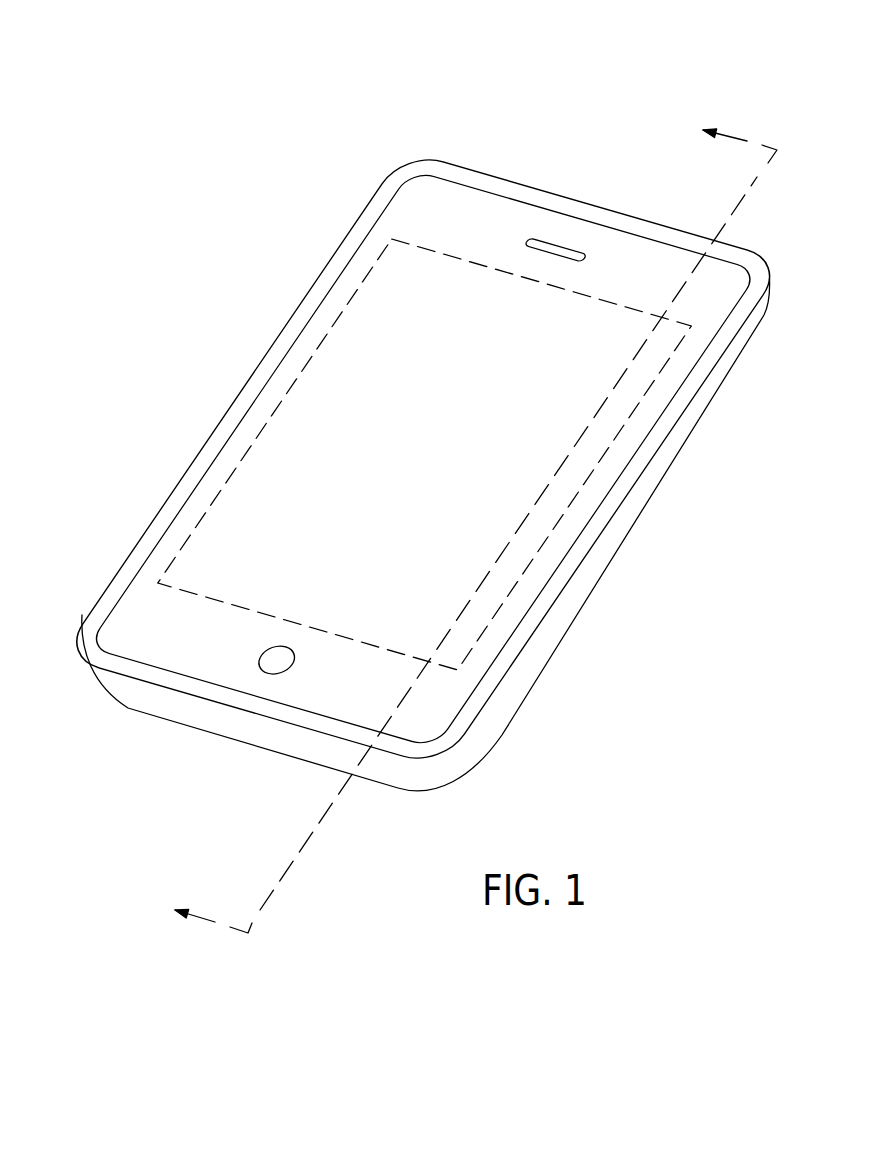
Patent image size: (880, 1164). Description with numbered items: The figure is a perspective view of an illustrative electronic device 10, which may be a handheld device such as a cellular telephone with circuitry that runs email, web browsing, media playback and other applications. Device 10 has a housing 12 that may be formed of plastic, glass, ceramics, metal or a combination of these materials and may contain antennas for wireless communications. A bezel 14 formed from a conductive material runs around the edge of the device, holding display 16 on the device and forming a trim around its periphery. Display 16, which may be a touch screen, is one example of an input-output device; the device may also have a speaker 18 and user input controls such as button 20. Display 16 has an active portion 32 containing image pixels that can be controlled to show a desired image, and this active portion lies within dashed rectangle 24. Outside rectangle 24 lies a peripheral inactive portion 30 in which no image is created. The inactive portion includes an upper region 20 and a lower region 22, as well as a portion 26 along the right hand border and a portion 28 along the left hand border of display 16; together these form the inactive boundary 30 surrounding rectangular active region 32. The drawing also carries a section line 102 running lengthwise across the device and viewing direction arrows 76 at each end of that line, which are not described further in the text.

The electronic device 10 is at (742, 62).
The housing 12 is at (755, 330).
The bezel 14 is at (313, 289).
The display 16 is at (467, 212).
The speaker 18 is at (555, 247).
The button 20 is at (277, 675).
The lower region 22 is at (113, 563).
The dashed rectangle 24 is at (562, 517).
The right border portion 26 is at (547, 565).
The left border portion 28 is at (217, 473).
The inactive portion 30 is at (162, 625).
The active portion 32 is at (297, 433).
The viewing direction 76 is at (733, 138).
The section line 102 is at (757, 185).